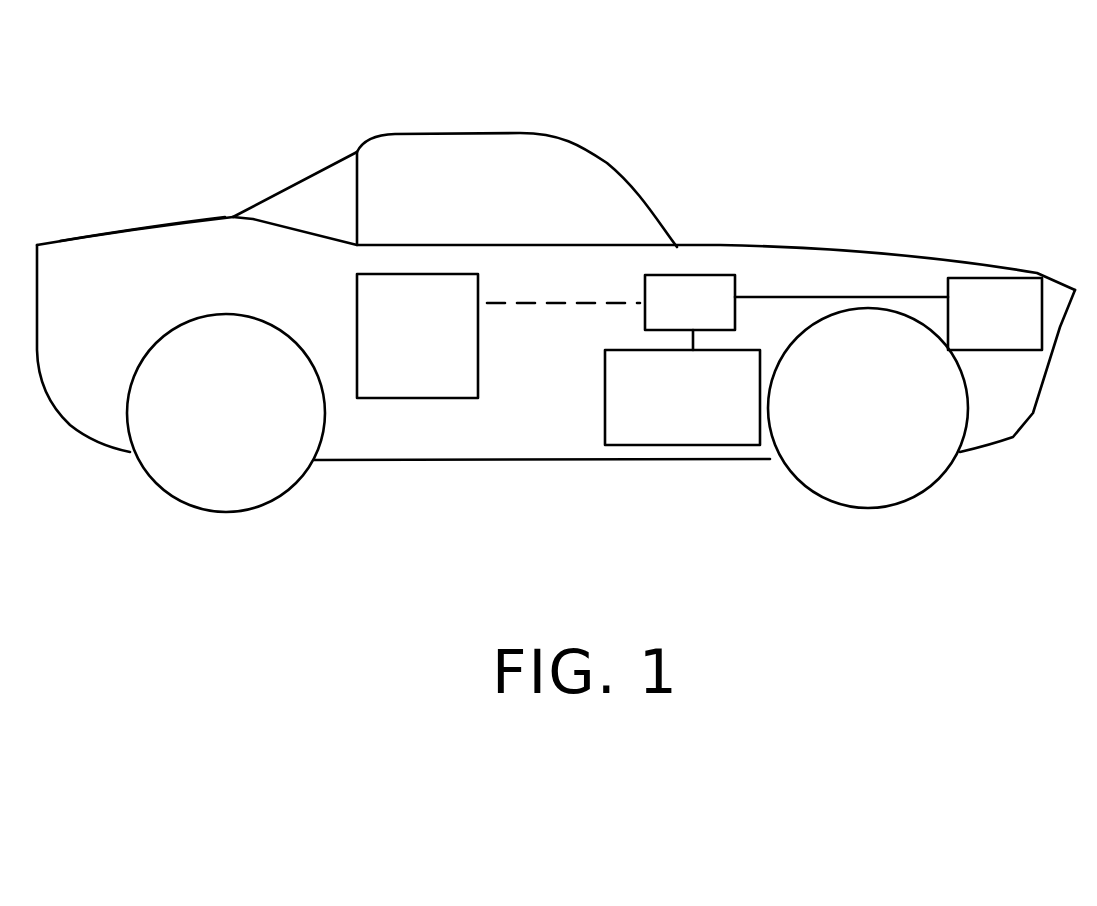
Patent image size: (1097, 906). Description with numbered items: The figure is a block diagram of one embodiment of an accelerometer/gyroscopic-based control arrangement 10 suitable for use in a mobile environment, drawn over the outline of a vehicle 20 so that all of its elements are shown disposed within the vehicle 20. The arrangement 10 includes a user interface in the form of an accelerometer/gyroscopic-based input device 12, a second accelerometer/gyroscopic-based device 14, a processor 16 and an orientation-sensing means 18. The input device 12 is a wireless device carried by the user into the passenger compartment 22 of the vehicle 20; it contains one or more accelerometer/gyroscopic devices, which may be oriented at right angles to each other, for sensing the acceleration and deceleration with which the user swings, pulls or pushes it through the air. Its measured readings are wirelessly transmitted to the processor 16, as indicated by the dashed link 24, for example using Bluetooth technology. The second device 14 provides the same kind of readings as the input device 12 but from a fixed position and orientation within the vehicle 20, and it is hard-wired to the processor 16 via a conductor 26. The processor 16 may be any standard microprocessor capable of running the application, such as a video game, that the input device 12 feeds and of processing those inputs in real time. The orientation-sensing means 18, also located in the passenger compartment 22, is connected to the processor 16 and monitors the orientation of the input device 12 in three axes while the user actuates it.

The accelerometer/gyroscopic-based control arrangement 10 is at (880, 125).
The accelerometer/gyroscopic-based input device 12 is at (422, 398).
The second accelerometer/gyroscopic-based device 14 is at (997, 278).
The processor 16 is at (700, 275).
The orientation-sensing means 18 is at (702, 445).
The vehicle 20 is at (153, 228).
The passenger compartment 22 is at (497, 218).
The wireless transmission 24 is at (553, 303).
The conductor 26 is at (828, 297).